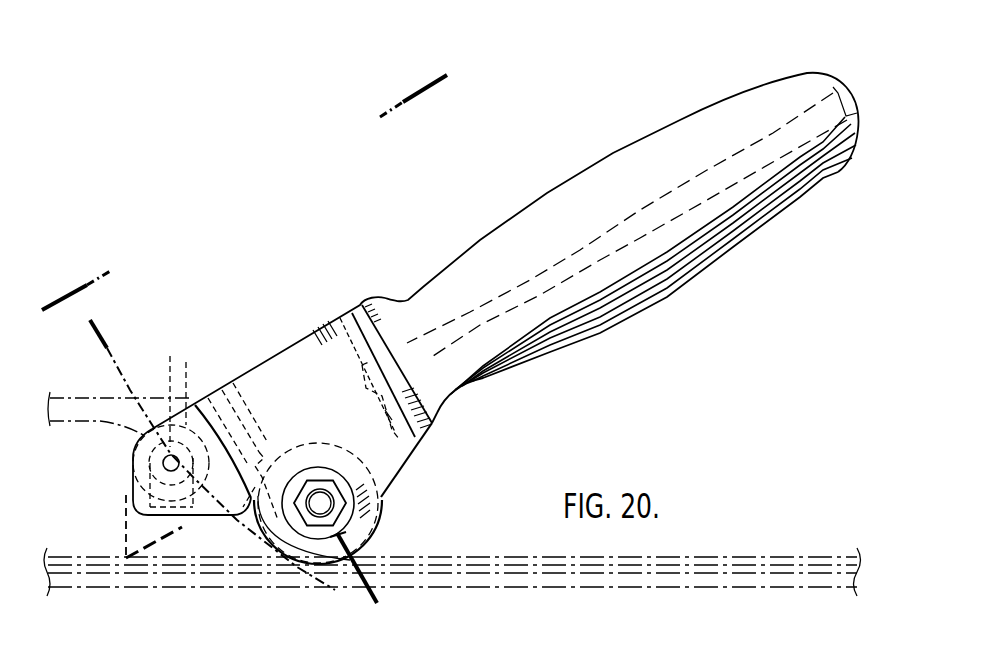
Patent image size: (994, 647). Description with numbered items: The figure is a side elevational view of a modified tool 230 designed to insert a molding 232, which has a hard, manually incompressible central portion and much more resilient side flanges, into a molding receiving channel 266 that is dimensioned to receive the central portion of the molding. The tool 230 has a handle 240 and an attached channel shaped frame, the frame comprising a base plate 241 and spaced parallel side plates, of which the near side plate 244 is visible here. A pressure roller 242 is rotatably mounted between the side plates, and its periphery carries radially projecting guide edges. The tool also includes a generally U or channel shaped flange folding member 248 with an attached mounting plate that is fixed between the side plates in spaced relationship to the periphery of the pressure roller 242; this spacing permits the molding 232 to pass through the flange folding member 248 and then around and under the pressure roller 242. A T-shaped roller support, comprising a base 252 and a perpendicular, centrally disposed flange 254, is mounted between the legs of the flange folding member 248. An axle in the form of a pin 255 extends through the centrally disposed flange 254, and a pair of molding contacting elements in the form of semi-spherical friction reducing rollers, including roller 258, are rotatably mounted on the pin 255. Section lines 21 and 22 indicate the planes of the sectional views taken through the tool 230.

The section line 21- 21 is at (433, 80).
The section line 22- 22 is at (88, 332).
The modified tool 230 is at (371, 268).
The molding 232 is at (115, 431).
The handle 240 is at (658, 305).
The base plate 241 is at (404, 466).
The pressure roller 242 is at (383, 516).
The side plate 244 is at (338, 412).
The flange folding member 248 is at (203, 515).
The base 252 is at (140, 523).
The centrally disposed flange 254 is at (133, 474).
The pin 255 is at (170, 356).
The semi-spherical friction reducing roller 258 is at (186, 362).
The molding receiving channel 266 is at (143, 588).